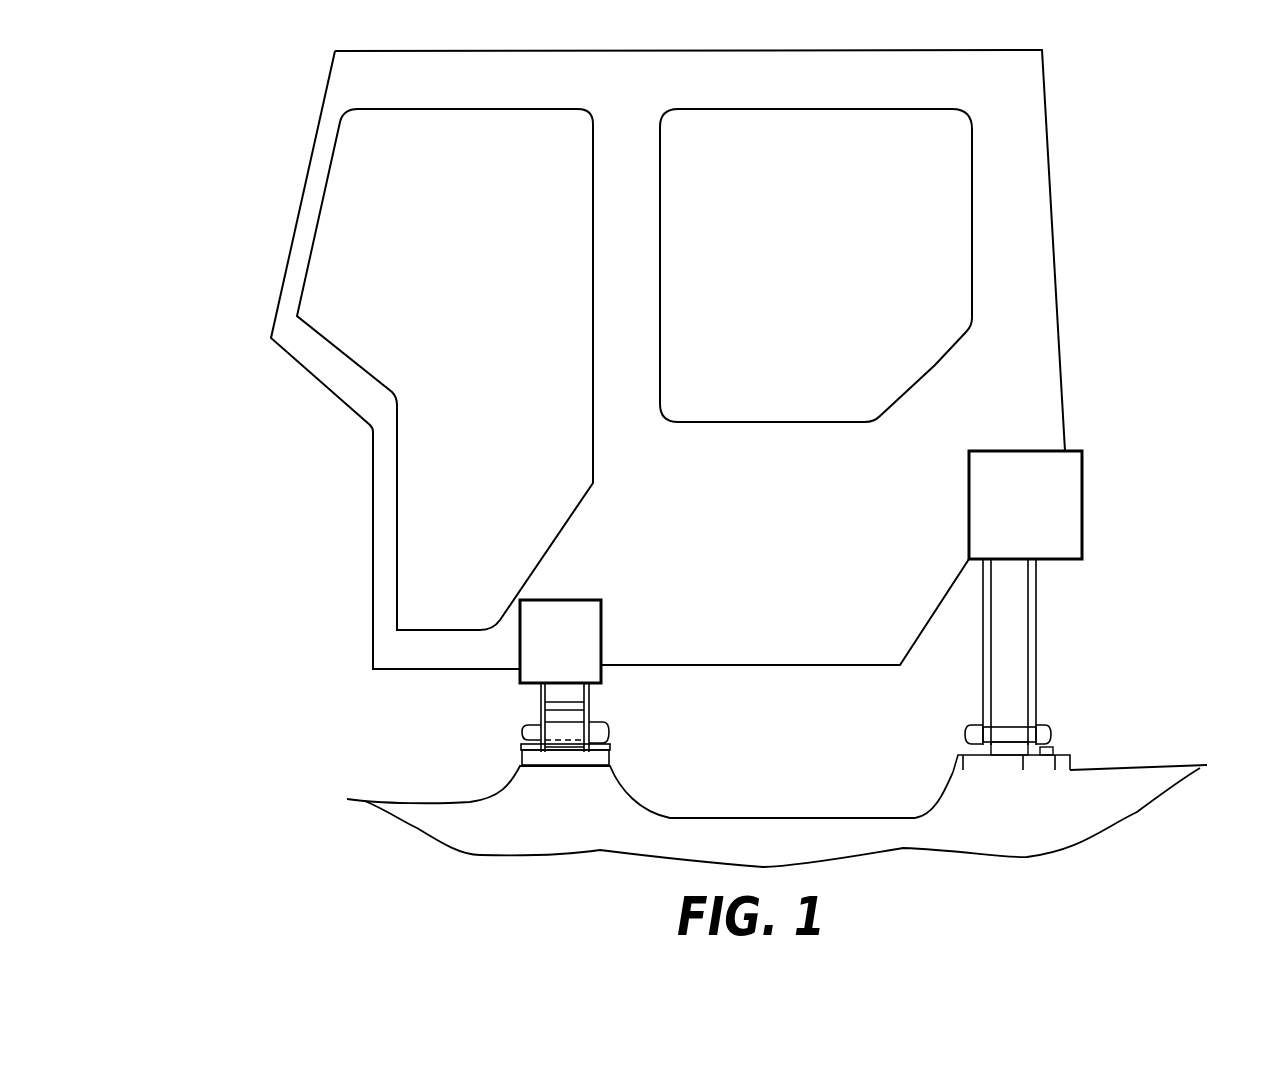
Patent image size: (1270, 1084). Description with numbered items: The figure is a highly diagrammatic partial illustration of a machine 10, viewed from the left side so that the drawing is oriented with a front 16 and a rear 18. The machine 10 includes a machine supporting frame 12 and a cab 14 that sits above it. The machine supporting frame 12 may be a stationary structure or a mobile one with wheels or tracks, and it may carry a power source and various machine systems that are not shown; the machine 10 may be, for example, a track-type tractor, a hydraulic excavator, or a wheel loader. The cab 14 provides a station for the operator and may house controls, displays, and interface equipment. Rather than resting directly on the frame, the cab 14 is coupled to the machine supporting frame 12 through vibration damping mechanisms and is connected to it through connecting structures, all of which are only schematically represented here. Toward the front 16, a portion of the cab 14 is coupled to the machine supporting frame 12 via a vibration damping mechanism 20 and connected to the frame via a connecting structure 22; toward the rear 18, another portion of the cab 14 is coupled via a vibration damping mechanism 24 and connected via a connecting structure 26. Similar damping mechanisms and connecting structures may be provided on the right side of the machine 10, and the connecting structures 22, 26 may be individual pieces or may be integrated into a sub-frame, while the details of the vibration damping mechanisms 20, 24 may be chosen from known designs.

The machine 10 is at (248, 573).
The machine supporting frame 12 is at (415, 828).
The cab 14 is at (1045, 122).
The front 16 is at (191, 218).
The rear 18 is at (1213, 212).
The vibration damping mechanism 20 is at (605, 578).
The connecting structure 22 is at (630, 730).
The vibration damping mechanism 24 is at (1105, 475).
The connecting structure 26 is at (1060, 731).